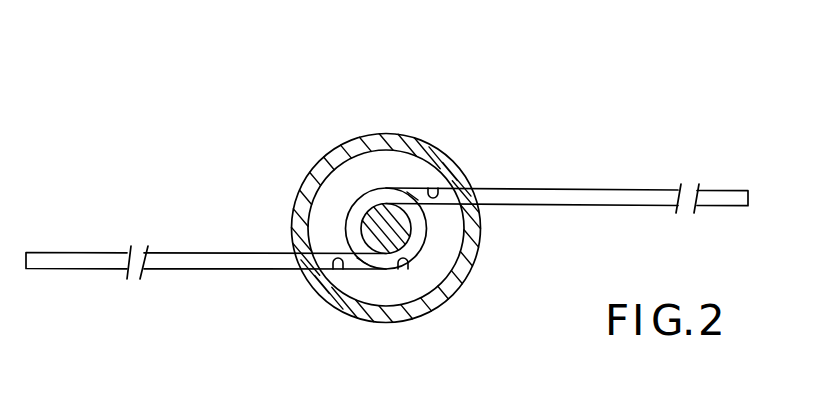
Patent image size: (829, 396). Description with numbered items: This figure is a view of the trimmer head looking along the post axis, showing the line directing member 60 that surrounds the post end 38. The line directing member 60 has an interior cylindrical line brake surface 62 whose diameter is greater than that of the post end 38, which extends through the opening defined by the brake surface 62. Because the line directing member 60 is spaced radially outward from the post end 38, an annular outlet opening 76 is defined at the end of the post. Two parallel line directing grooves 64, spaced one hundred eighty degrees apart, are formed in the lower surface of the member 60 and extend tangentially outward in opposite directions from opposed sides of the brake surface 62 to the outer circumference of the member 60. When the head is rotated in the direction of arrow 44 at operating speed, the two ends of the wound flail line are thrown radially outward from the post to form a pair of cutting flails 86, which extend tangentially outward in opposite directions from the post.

The post end 38 is at (397, 230).
The arrow 44 is at (356, 110).
The line directing member 60 is at (278, 163).
The line brake surface 62 is at (399, 312).
The line directing grooves 64 is at (435, 187).
The annular outlet opening 76 is at (352, 223).
The cutting flails 86 is at (169, 256).